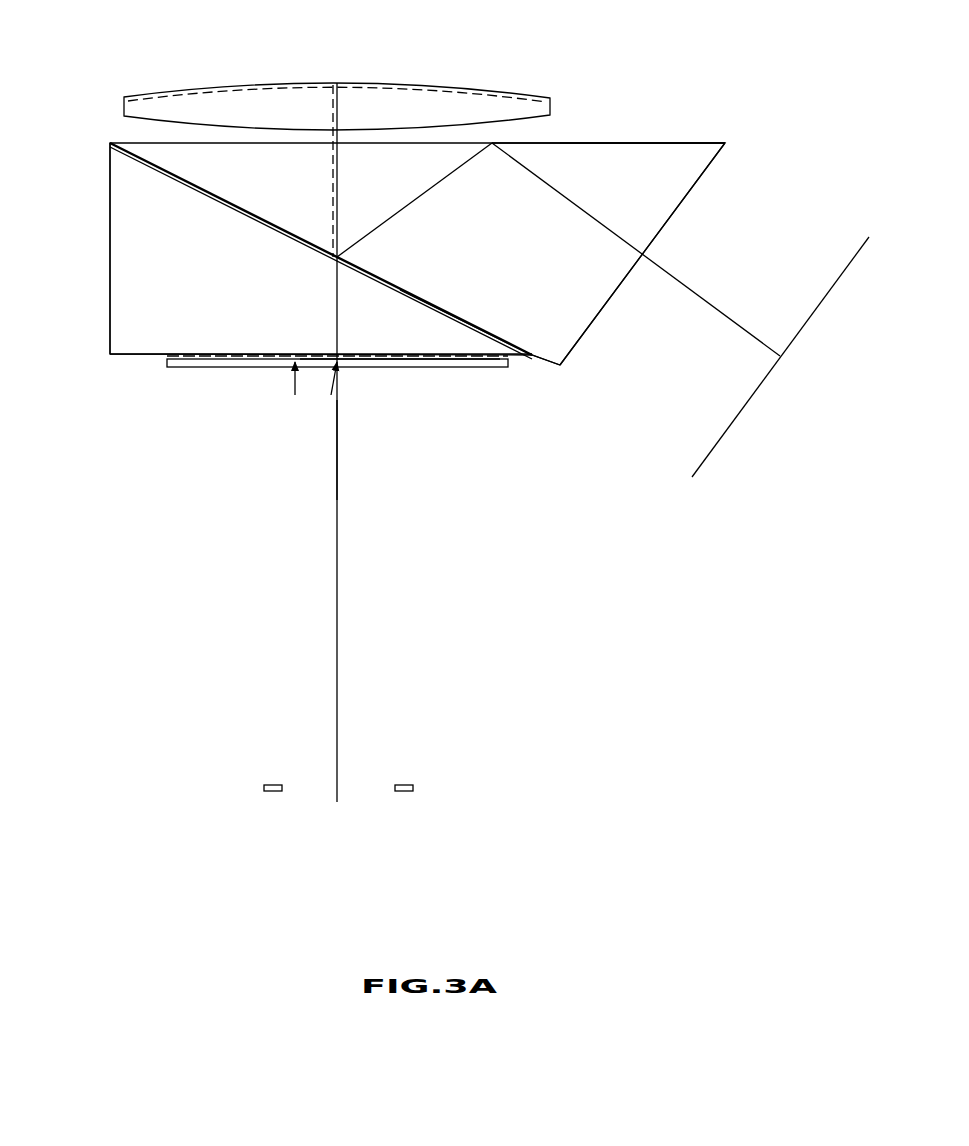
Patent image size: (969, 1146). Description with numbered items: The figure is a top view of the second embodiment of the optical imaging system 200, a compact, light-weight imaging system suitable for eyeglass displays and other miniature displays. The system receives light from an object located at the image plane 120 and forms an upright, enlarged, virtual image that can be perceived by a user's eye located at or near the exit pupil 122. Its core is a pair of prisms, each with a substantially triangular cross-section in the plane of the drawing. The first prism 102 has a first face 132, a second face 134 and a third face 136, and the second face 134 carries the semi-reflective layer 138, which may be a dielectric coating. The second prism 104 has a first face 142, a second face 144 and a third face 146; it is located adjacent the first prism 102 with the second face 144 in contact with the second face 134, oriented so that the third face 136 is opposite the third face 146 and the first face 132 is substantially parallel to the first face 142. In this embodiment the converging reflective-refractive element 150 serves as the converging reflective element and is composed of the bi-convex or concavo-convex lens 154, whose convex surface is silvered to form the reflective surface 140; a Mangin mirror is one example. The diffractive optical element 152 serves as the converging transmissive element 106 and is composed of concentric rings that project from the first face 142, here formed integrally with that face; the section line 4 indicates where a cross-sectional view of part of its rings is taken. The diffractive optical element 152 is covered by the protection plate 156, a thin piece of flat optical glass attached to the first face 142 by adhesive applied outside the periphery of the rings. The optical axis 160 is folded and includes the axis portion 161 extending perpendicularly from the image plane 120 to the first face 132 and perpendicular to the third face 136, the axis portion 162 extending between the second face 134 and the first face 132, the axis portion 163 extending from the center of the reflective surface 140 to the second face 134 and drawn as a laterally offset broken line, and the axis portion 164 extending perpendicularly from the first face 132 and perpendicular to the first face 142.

The section line 4- 4 is at (312, 391).
The first prism 102 is at (641, 172).
The second prism 104 is at (138, 314).
The converging transmissive element 106 is at (247, 360).
The image plane 120 is at (836, 282).
The exit pupil 122 is at (272, 785).
The first face 132 is at (703, 142).
The second face 134 is at (545, 362).
The third face 136 is at (703, 172).
The semi-reflective layer 138 is at (497, 345).
The reflective surface 140 is at (220, 86).
The first face 142 is at (138, 357).
The second face 144 is at (143, 167).
The third face 146 is at (110, 229).
The converging reflective-refractive element 150 is at (124, 104).
The diffractive optical element 152 is at (380, 360).
The bi-convex or concavo-convex lens 154 is at (380, 103).
The protection plate 156 is at (445, 361).
The optical axis 160 is at (341, 481).
The axis portion 161 is at (706, 304).
The axis portion 162 is at (428, 192).
The axis portion 163 is at (333, 188).
The axis portion 164 is at (337, 458).
The optical imaging system 200 is at (417, 621).